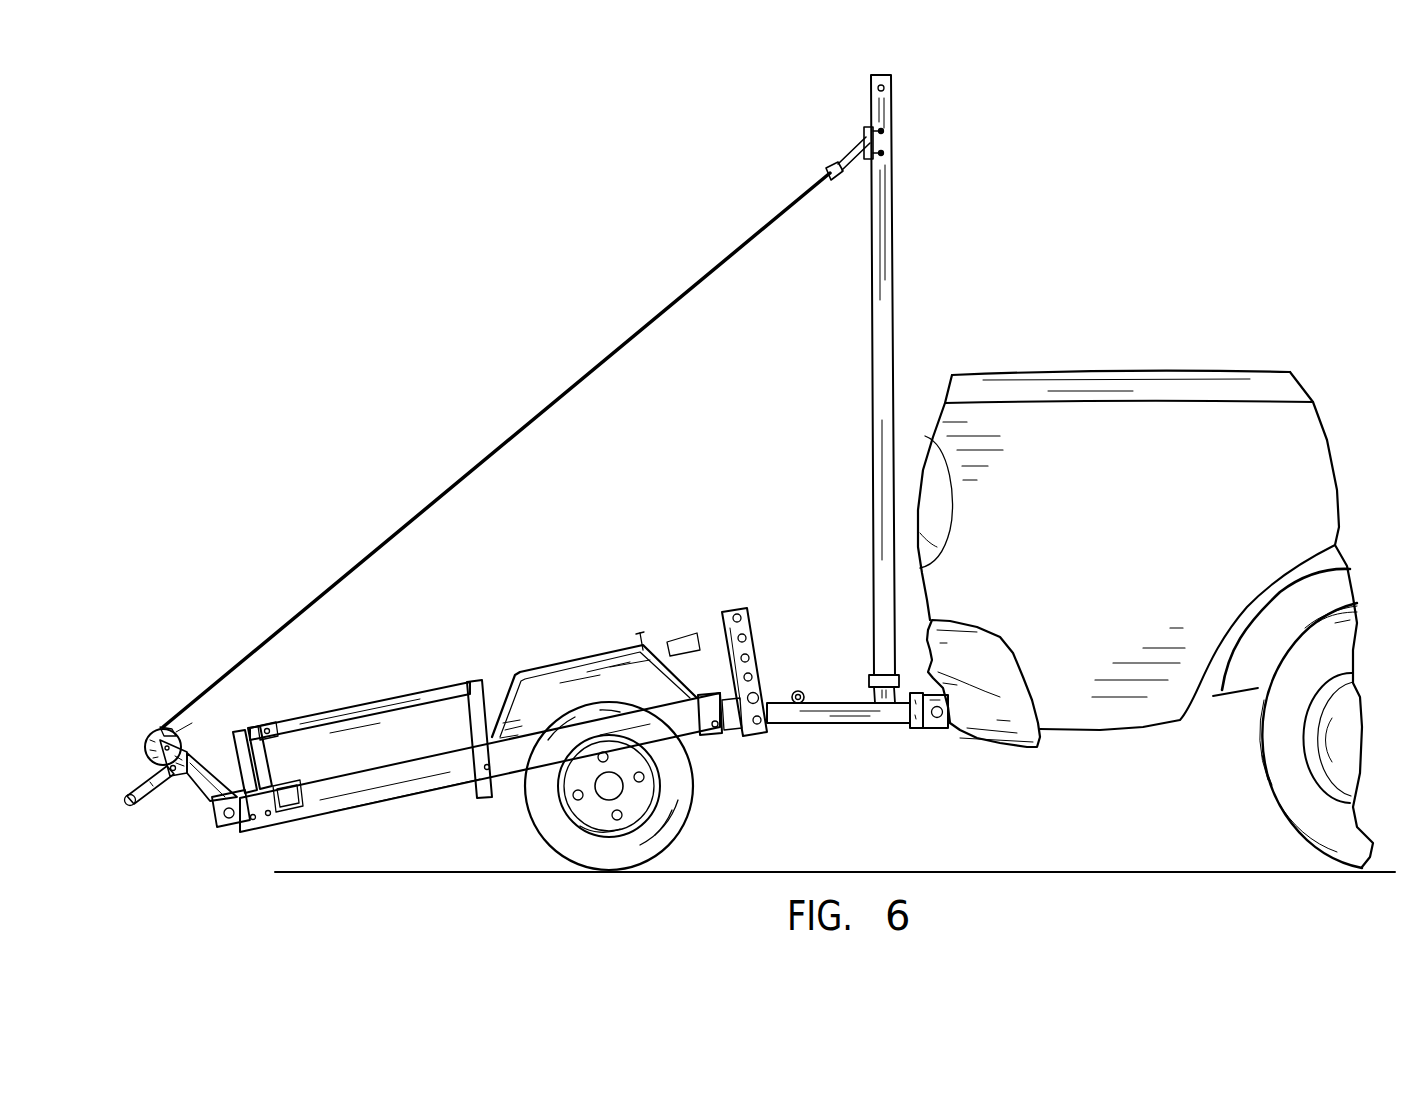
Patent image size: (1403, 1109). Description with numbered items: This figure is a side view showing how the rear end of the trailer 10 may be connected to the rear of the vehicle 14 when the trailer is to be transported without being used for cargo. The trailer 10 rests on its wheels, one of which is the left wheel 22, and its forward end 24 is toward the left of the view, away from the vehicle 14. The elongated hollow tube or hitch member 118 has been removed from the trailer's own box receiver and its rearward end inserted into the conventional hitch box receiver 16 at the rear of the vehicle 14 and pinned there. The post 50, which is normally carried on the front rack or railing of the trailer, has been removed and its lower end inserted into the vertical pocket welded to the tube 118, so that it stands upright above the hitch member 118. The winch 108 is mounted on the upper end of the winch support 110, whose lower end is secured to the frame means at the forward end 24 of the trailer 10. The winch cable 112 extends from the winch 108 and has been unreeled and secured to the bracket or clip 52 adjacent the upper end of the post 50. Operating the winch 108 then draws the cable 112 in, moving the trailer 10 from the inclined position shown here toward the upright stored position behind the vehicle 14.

The trailer 10 is at (497, 670).
The vehicle 14 is at (1146, 362).
The hitch box receiver 16 is at (940, 750).
The left wheel 22 is at (681, 783).
The forward end 24 is at (137, 735).
The post 50 is at (883, 291).
The bracket 52 is at (866, 133).
The winch 108 is at (160, 733).
The winch support 110 is at (195, 790).
The cable 112 is at (588, 368).
The hitch member 118 is at (825, 740).